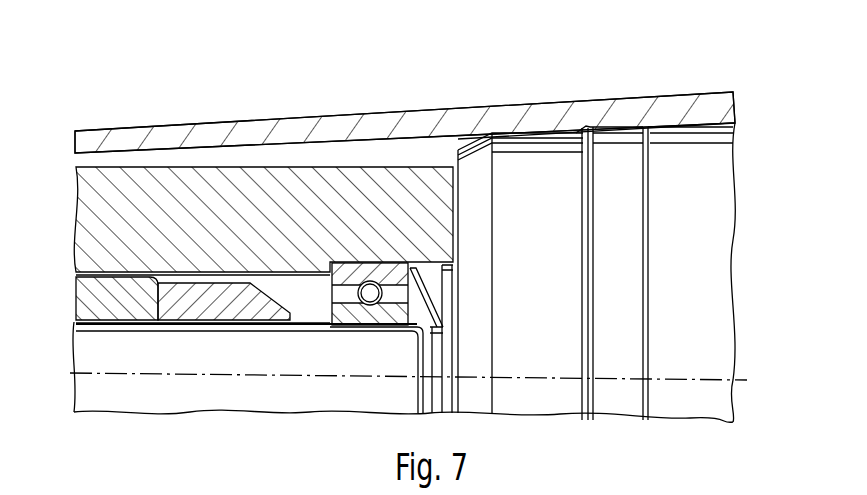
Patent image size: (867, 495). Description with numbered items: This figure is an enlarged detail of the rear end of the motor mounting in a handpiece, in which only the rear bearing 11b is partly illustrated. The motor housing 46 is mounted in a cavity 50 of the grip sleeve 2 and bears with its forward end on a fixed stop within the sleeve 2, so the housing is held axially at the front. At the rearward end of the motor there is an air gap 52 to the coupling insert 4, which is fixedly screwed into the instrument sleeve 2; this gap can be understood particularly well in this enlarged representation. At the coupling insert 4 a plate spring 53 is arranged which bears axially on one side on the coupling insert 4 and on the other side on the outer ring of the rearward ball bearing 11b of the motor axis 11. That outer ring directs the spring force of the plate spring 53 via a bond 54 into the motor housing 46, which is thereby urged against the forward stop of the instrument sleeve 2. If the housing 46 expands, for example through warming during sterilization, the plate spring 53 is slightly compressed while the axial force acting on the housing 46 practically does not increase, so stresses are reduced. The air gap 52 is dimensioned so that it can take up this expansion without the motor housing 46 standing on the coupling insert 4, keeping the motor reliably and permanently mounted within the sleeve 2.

The grip sleeve 2 is at (226, 117).
The coupling insert 4 is at (523, 130).
The motor housing 46 is at (146, 178).
The cavity 50 is at (292, 150).
The air gap 52 is at (459, 203).
The plate spring 53 is at (432, 306).
The bond 54 is at (332, 274).
The motor axis 11 is at (203, 366).
The rear bearing 11b is at (340, 328).